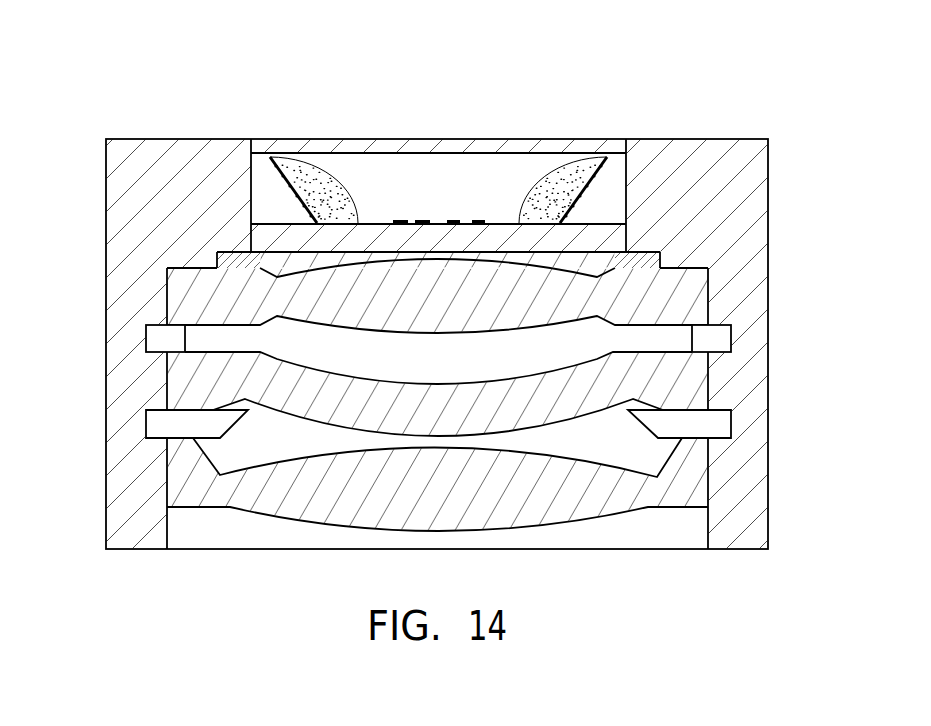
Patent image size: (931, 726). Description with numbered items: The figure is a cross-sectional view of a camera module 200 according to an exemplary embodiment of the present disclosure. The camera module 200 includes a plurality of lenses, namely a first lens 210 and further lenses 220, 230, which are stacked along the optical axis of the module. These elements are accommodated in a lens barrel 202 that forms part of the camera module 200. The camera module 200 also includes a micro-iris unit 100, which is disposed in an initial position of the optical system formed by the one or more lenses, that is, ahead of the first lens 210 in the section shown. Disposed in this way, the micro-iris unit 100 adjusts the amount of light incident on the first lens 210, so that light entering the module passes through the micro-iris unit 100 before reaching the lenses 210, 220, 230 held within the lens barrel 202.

The micro-iris unit 100 is at (521, 136).
The camera module 200 is at (701, 111).
The lens barrel 202 is at (753, 302).
The first lens 210 is at (178, 300).
The lens 220 is at (176, 384).
The lens 230 is at (180, 474).